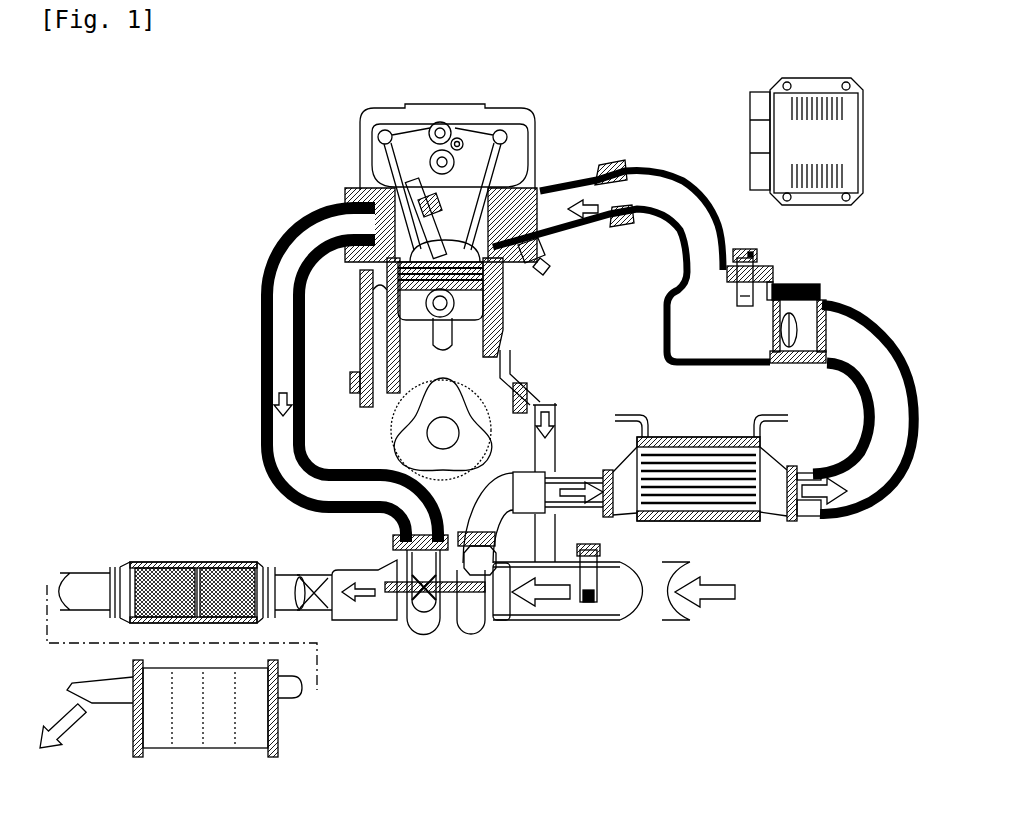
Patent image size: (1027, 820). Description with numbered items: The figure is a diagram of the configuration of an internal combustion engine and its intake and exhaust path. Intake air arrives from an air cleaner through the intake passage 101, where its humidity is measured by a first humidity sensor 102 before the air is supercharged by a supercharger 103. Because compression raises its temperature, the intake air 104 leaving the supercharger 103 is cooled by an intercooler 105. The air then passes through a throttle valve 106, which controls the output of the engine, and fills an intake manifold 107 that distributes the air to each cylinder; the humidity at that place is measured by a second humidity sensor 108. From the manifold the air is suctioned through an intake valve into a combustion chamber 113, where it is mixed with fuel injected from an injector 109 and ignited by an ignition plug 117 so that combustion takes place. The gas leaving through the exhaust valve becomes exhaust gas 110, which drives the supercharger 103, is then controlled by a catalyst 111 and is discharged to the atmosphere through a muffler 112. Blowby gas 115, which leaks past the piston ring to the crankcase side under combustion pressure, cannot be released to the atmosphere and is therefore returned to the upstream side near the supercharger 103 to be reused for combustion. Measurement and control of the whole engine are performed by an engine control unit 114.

The intake pipe 101 is at (740, 593).
The first humidity sensor 102 is at (597, 546).
The supercharger 103 is at (448, 620).
The intake air 104 is at (577, 480).
The intercooler 105 is at (712, 446).
The throttle valve 106 is at (782, 302).
The intake manifold 107 is at (666, 322).
The second humidity sensor 108 is at (757, 257).
The injector 109 is at (545, 256).
The exhaust gas 110 is at (283, 402).
The catalyst 111 is at (170, 566).
The muffler 112 is at (265, 740).
The combustion chamber 113 is at (350, 210).
The engine control unit 114 is at (752, 106).
The blowby gas 115 is at (553, 398).
The ignition plug 117 is at (417, 168).